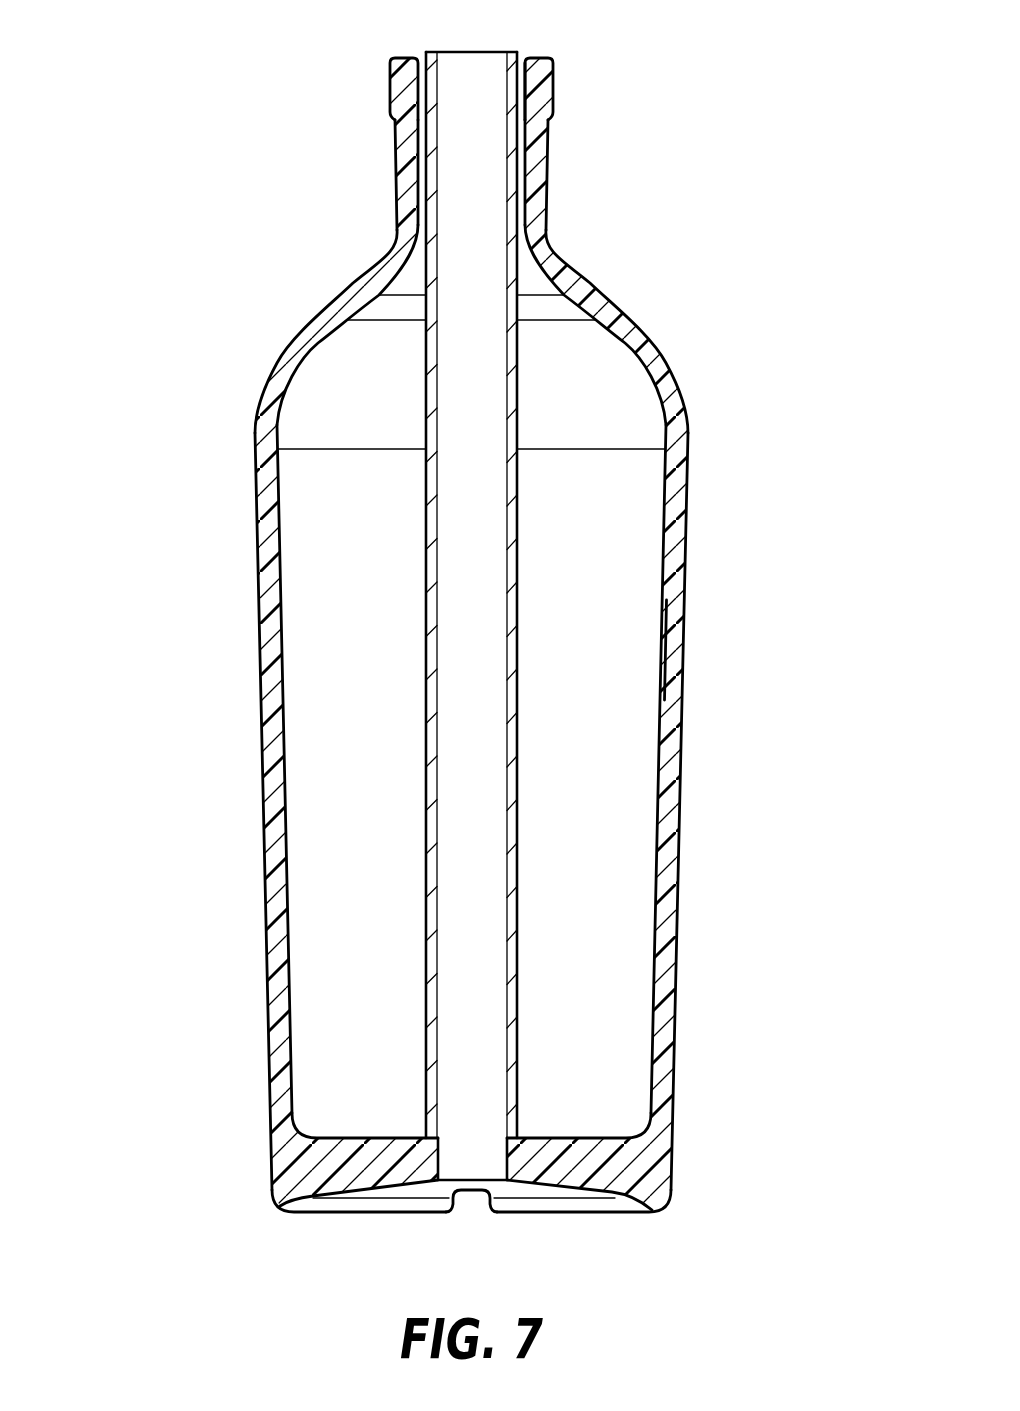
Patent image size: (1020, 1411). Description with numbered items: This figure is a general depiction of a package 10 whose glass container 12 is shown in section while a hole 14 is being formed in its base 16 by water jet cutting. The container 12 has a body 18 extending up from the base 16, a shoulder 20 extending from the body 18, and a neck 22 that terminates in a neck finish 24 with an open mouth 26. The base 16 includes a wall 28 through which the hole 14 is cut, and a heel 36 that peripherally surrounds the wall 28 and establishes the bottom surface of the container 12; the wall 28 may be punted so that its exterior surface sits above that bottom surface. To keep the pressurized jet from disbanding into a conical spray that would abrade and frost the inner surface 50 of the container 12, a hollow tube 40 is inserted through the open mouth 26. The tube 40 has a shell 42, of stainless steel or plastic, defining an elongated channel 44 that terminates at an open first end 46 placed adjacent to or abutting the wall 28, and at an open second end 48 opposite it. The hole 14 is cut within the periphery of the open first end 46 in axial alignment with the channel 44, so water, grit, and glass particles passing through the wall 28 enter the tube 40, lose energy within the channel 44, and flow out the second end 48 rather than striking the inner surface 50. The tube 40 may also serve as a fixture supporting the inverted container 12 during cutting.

The package 10 is at (190, 85).
The container 12 is at (222, 598).
The hole 14 is at (503, 1165).
The base 16 is at (645, 1233).
The body 18 is at (695, 740).
The shoulder 20 is at (688, 380).
The neck 22 is at (560, 170).
The neck finish 24 is at (560, 72).
The open mouth 26 is at (522, 57).
The wall 28 is at (360, 1173).
The heel 36 is at (279, 1223).
The hollow tube 40 is at (420, 405).
The shell 42 is at (515, 488).
The elongated channel 44 is at (510, 533).
The open first end 46 is at (517, 1140).
The open second end 48 is at (430, 55).
The inner surface 50 is at (672, 636).